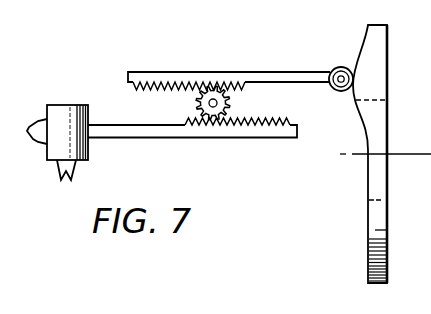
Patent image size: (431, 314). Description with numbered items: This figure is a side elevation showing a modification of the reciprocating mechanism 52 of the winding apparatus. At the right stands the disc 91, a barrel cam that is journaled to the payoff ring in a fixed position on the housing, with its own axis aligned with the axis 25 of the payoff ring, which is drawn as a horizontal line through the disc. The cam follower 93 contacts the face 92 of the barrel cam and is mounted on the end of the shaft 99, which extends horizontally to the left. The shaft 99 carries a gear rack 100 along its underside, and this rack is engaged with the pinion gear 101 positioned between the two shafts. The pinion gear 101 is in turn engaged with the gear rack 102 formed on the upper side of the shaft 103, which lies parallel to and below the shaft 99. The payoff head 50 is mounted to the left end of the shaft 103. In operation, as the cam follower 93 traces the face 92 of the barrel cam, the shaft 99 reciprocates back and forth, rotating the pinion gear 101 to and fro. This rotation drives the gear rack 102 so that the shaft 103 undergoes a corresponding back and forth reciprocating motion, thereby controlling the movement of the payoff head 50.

The axis 25 is at (394, 154).
The payoff head 50 is at (88, 158).
The reciprocating mechanism 52 is at (90, 63).
The disc 91 is at (389, 87).
The face 92 is at (366, 41).
The cam follower 93 is at (336, 66).
The shaft 99 is at (203, 71).
The gear rack 100 is at (171, 94).
The pinion gear 101 is at (232, 102).
The gear rack 102 is at (271, 120).
The shaft 103 is at (182, 139).